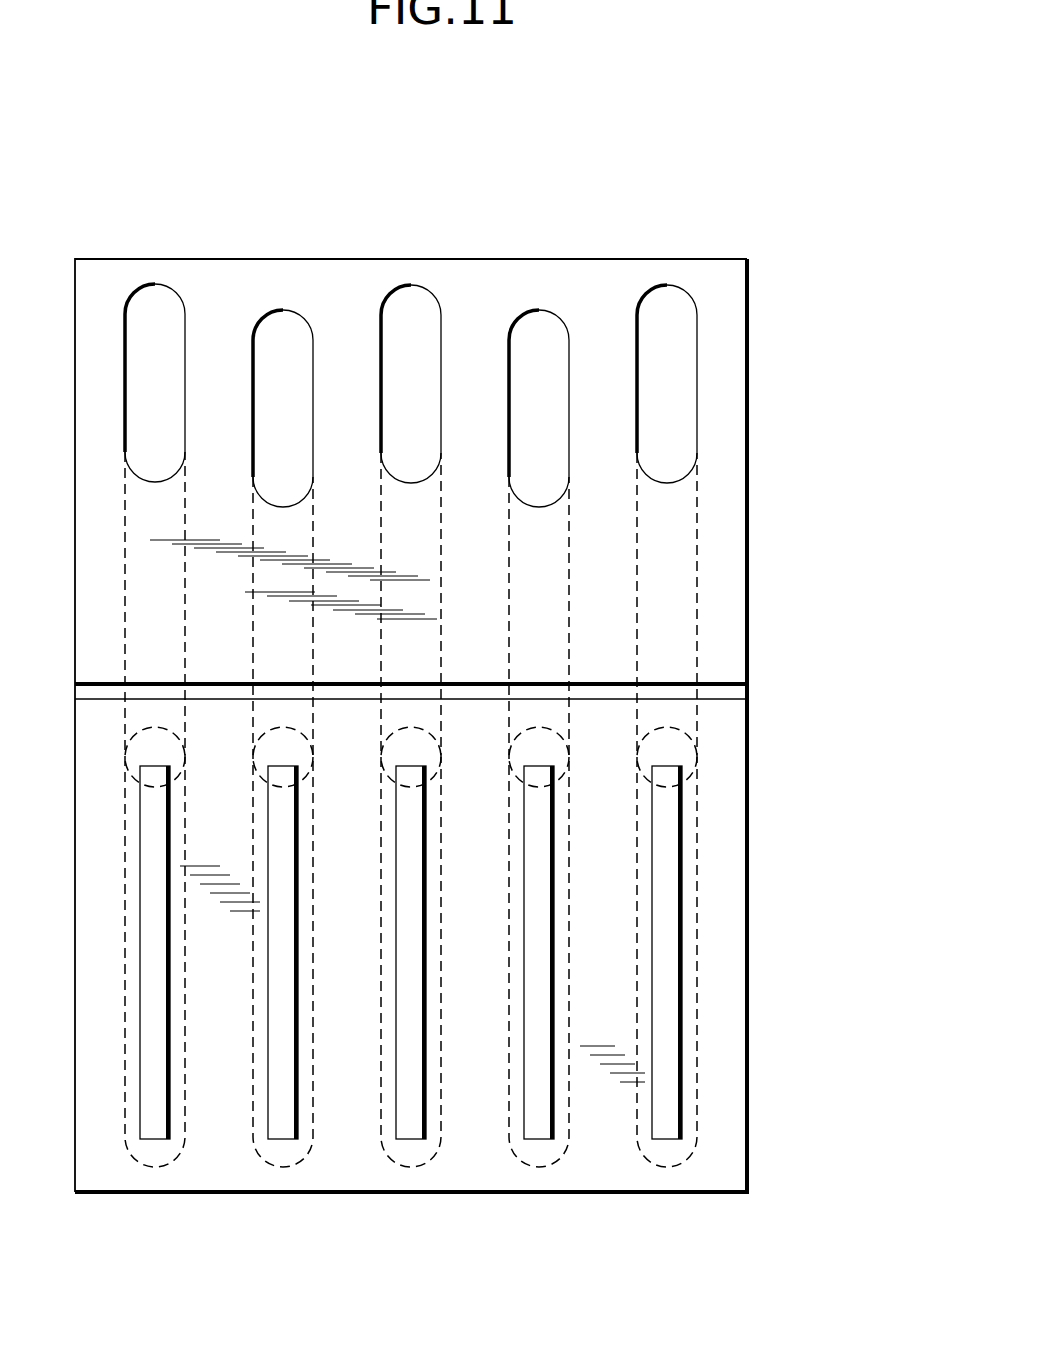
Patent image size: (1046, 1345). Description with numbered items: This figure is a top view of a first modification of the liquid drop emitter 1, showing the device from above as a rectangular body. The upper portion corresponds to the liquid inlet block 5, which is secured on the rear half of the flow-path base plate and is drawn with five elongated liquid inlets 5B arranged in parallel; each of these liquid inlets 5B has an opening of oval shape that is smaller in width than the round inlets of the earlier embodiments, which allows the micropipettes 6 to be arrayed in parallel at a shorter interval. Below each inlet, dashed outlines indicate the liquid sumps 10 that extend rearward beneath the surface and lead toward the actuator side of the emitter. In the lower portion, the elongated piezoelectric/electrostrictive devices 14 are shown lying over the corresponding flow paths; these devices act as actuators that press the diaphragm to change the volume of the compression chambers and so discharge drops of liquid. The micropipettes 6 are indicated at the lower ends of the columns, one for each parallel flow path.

The liquid drop emitter 1 is at (764, 206).
The liquid inlet block 5 is at (725, 305).
The liquid inlets 5B is at (143, 287).
The micropipettes 6 is at (142, 1178).
The liquid sumps 10 is at (568, 592).
The piezoelectric/electrostrictive devices 14 is at (668, 855).